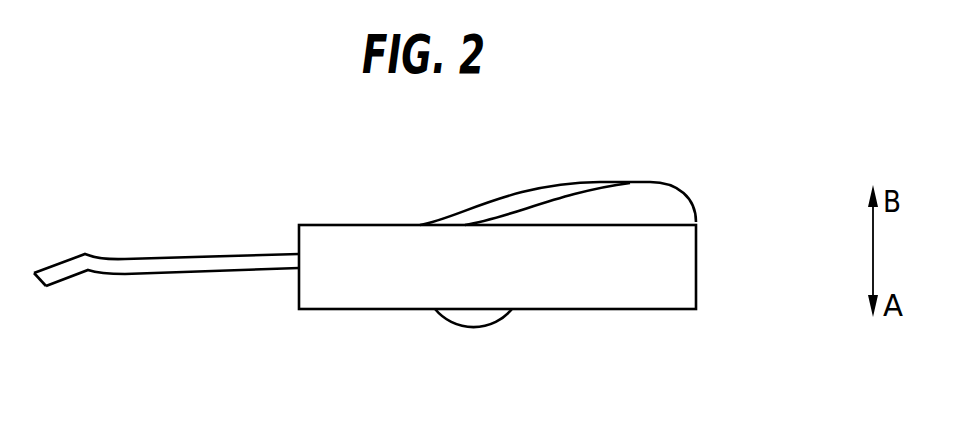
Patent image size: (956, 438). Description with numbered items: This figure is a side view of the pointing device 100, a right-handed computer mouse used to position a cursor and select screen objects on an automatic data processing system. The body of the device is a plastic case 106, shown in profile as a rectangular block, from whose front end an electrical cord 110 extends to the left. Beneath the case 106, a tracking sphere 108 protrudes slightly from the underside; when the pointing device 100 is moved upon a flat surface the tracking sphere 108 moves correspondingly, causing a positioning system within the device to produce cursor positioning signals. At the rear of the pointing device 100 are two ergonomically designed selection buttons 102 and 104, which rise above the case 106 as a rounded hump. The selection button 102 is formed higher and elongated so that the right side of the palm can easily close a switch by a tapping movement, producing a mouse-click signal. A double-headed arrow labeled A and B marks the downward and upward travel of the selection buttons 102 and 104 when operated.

The pointing device 100 is at (522, 112).
The selection button 102 is at (500, 205).
The selection button 104 is at (658, 207).
The case 106 is at (640, 258).
The tracking sphere 108 is at (458, 327).
The electrical cord 110 is at (217, 257).